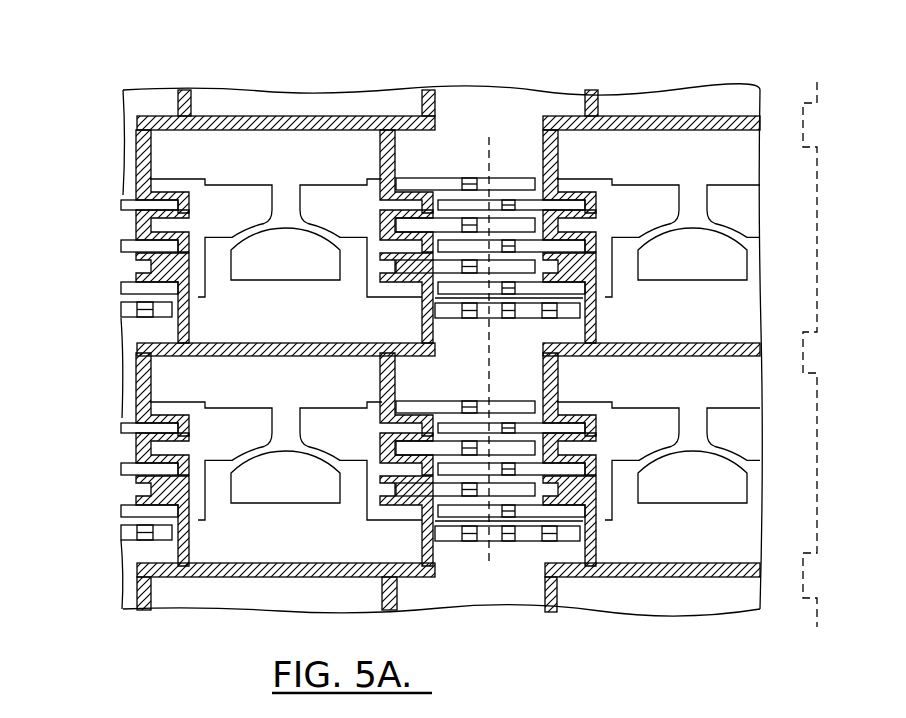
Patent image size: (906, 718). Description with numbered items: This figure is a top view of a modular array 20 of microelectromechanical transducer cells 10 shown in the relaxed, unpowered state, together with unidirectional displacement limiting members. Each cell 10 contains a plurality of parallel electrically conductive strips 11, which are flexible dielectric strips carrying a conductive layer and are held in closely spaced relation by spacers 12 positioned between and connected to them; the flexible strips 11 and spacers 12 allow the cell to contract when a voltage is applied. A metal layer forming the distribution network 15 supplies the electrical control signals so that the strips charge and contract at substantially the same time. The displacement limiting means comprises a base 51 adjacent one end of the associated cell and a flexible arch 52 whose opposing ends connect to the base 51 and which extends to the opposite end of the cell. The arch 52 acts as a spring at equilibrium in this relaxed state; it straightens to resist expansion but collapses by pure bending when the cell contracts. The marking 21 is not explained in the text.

The cell 10 is at (453, 129).
The electrically conductive strips 11 is at (452, 207).
The spacers 12 is at (508, 201).
The distribution network 15 is at (264, 122).
The modular array 20 is at (113, 119).
The section line 21 is at (579, 73).
The base 51 is at (223, 257).
The flexible arch 52 is at (243, 234).